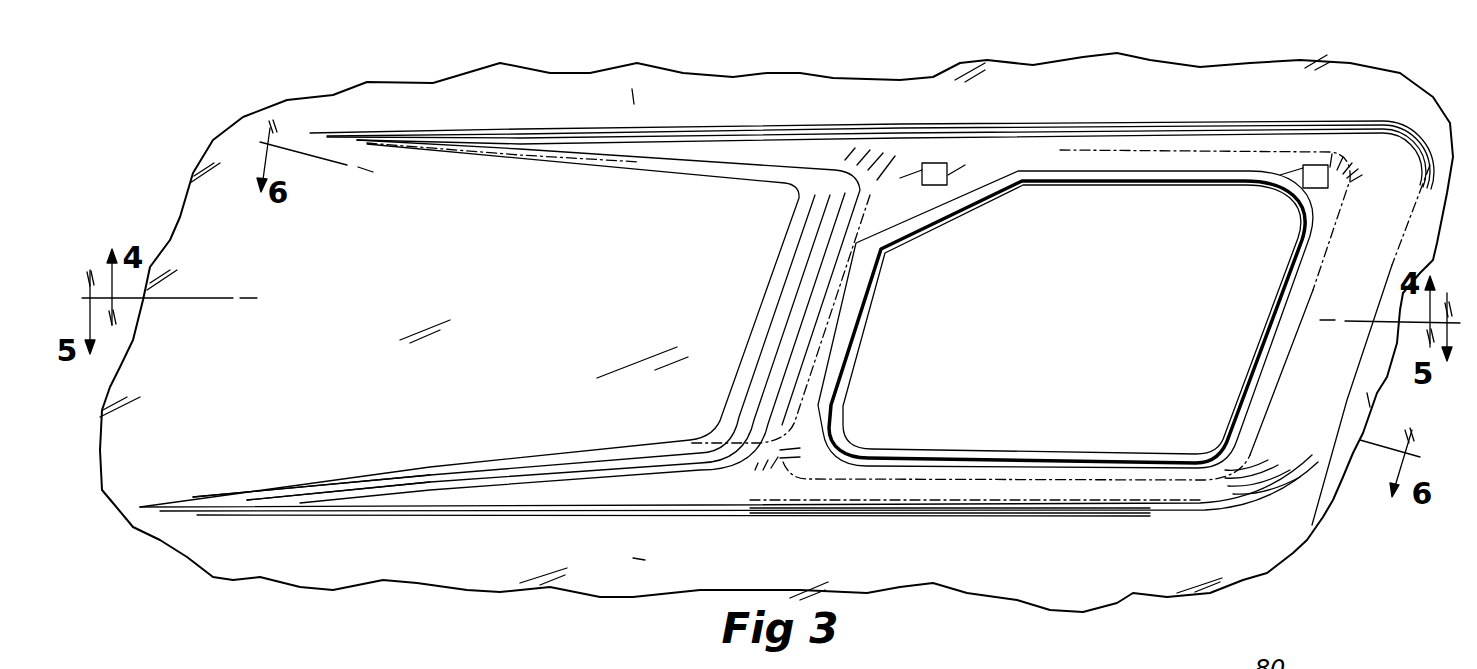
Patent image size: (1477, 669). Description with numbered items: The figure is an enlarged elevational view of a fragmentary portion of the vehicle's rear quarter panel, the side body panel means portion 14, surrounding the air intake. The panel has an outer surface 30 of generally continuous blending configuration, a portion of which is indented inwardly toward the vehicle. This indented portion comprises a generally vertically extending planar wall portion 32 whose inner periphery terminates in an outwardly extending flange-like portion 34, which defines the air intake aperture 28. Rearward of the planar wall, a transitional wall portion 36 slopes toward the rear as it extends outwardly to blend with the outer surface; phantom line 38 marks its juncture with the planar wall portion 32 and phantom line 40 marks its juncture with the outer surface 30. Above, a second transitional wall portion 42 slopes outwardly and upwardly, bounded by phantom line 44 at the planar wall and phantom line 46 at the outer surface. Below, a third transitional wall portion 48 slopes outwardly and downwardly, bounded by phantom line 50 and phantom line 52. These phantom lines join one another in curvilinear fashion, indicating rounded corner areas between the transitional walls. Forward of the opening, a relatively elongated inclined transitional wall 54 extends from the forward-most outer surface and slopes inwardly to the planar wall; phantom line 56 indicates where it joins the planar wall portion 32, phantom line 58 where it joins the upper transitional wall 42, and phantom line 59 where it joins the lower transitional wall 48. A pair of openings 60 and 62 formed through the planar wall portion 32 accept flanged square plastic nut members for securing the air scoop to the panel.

The side body panel means portion 14 is at (1272, 546).
The air intake aperture 28 is at (862, 318).
The outer surface 30 is at (637, 96).
The planar wall portion 32 is at (1195, 155).
The flange-like portion 34 is at (893, 452).
The transitional wall portion 36 is at (1311, 423).
The phantom line 38 is at (1277, 383).
The phantom line 40 is at (1412, 222).
The second transitional wall portion 42 is at (1190, 135).
The phantom line 44 is at (1062, 152).
The phantom line 46 is at (1337, 118).
The third transitional wall portion 48 is at (1163, 490).
The phantom line 50 is at (1000, 482).
The phantom line 52 is at (1022, 510).
The inclined transitional wall 54 is at (517, 338).
The phantom line 56 is at (818, 408).
The phantom line 58 is at (680, 160).
The phantom line 59 is at (432, 475).
The opening 60 is at (935, 185).
The opening 62 is at (1310, 180).